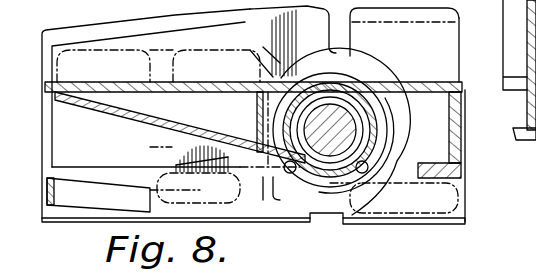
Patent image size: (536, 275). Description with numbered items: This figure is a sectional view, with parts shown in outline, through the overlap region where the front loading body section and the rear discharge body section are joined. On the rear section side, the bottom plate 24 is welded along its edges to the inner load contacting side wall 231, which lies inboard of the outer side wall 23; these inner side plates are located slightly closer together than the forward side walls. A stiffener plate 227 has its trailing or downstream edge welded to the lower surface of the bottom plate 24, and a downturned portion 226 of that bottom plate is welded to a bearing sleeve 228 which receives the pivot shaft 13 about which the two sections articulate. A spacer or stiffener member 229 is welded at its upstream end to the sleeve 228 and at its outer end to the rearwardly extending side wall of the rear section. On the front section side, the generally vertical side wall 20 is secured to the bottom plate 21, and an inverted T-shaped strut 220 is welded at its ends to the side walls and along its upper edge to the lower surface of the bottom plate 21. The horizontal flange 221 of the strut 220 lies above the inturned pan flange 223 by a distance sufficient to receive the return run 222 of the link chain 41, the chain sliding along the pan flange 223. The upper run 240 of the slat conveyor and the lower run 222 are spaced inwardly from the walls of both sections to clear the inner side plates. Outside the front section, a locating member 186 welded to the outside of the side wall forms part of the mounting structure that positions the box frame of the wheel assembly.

The outer side wall 23 is at (87, 26).
The inner load contacting side wall 231 is at (163, 1).
The bottom plate 24 is at (193, 87).
The upper run 240 is at (266, 41).
The pivot shaft 13 is at (333, 118).
The inverted T-shaped strut 220 is at (512, 25).
The side wall 20 is at (448, 65).
The bottom plate 21 is at (463, 92).
The locating member 186 is at (519, 92).
The spacer or stiffener member 229 is at (256, 110).
The downturned portion 226 is at (395, 112).
The bearing sleeve 228 is at (392, 140).
The stiffener plate 227 is at (130, 122).
The horizontal flange 221 is at (467, 174).
The return run 222 is at (287, 207).
The link chain 41 is at (427, 207).
The pan flange 223 is at (437, 226).